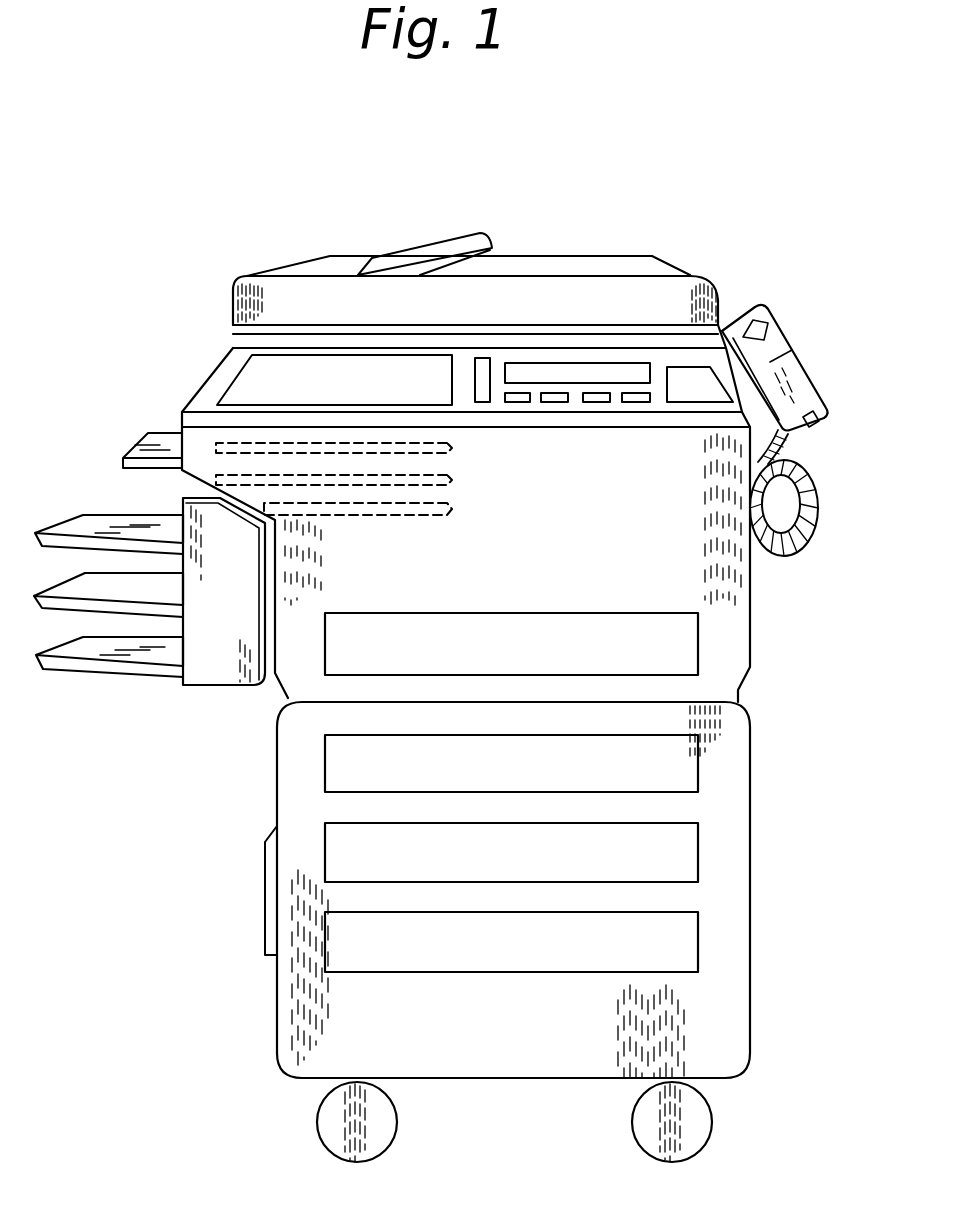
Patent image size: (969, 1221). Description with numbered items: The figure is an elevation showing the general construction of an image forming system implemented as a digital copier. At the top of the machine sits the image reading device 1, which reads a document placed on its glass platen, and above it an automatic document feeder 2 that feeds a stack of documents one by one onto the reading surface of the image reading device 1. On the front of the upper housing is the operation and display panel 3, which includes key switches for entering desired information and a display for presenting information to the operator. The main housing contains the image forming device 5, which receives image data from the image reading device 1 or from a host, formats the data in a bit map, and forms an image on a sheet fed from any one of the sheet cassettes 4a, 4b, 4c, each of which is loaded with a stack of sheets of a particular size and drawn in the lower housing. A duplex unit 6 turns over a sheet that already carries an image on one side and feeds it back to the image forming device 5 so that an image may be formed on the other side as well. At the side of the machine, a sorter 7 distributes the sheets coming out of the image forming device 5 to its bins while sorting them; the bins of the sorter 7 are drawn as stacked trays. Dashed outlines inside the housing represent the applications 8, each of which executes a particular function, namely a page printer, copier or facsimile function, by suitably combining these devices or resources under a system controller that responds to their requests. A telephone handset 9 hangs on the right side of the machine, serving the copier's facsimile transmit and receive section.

The image reading device 1 is at (222, 335).
The automatic document feeder 2 is at (224, 285).
The operation and display panel 3 is at (726, 363).
The sheet cassette 4a is at (692, 768).
The sheet cassette 4b is at (693, 857).
The sheet cassette 4c is at (693, 938).
The image forming device 5 is at (766, 590).
The duplex unit 6 is at (692, 642).
The sorter 7 is at (193, 702).
The applications 8 is at (452, 448).
The telephone handset 9 is at (807, 382).